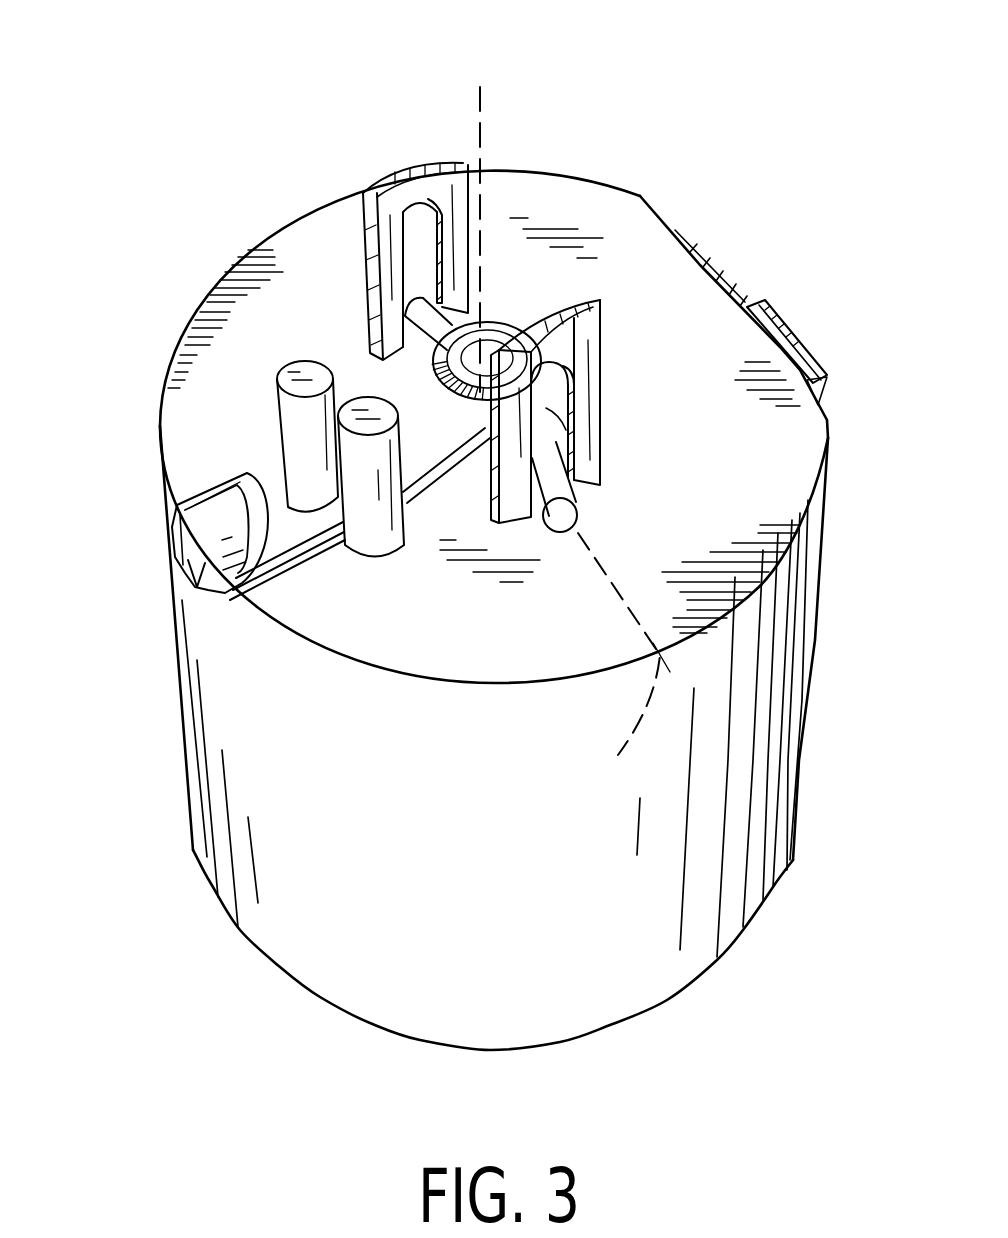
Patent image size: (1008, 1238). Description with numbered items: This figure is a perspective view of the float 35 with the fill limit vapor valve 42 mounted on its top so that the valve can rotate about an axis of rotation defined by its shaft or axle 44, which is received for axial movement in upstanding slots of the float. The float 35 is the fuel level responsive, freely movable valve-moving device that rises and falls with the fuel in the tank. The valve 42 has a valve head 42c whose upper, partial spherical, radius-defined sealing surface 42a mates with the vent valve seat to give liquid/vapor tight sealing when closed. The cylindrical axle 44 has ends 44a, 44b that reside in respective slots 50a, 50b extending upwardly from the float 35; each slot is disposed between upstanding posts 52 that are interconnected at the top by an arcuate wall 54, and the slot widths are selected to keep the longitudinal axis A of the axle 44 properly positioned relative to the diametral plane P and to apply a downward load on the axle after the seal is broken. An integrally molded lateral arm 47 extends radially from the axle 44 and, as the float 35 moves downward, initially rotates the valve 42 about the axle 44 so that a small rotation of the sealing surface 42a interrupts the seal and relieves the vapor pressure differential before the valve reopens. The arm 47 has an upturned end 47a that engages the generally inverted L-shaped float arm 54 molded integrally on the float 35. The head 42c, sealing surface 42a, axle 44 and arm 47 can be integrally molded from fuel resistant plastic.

The float 35 is at (763, 497).
The fill limit vapor valve 42 is at (518, 306).
The sealing surface 42a is at (530, 333).
The valve head 42c is at (433, 357).
The shaft or axle 44 is at (552, 497).
The end of axle 44a is at (567, 530).
The end of axle 44b is at (407, 307).
The lateral arm 47 is at (407, 487).
The upturned end 47a is at (252, 585).
The slot 50a is at (583, 423).
The slot 50b is at (363, 257).
The upstanding posts 52 is at (476, 250).
The arcuate wall / float arm 54 is at (440, 167).
The diametral plane P is at (488, 100).
The longitudinal axis A is at (600, 770).